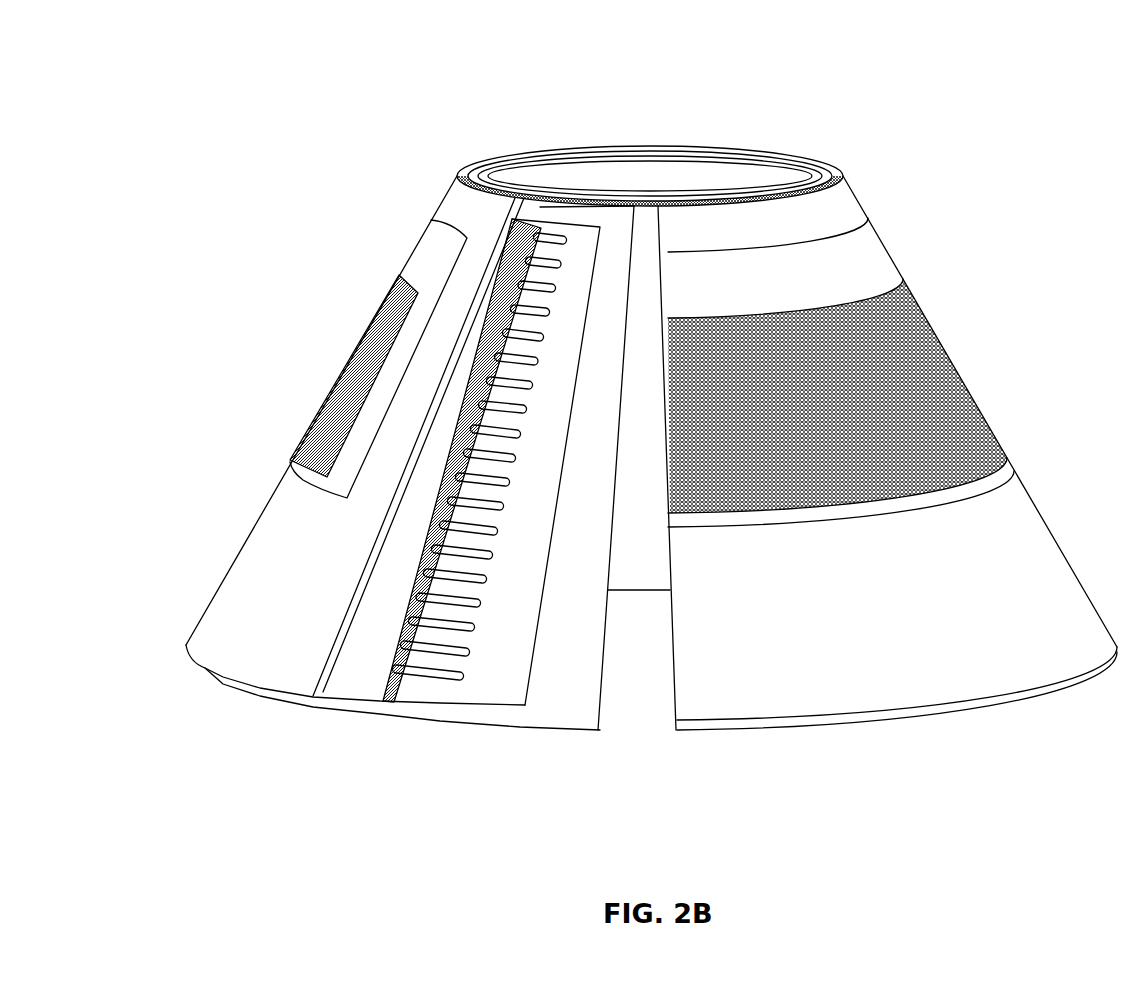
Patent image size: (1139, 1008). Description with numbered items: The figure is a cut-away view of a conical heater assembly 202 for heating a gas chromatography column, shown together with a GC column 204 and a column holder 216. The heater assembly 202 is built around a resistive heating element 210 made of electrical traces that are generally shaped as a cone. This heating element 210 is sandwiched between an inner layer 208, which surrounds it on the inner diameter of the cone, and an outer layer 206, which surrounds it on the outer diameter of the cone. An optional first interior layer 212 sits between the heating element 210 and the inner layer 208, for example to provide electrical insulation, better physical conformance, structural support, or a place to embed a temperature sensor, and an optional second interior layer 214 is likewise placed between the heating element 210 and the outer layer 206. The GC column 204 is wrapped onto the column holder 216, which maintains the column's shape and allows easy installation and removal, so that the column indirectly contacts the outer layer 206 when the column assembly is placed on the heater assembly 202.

The heater assembly 202 is at (1003, 31).
The GC column 204 is at (360, 347).
The outer layer 206 is at (273, 553).
The inner layer 208 is at (580, 693).
The resistive heating element 210 is at (435, 637).
The first interior layer 212 is at (578, 243).
The second interior layer 214 is at (360, 660).
The column holder 216 is at (432, 257).